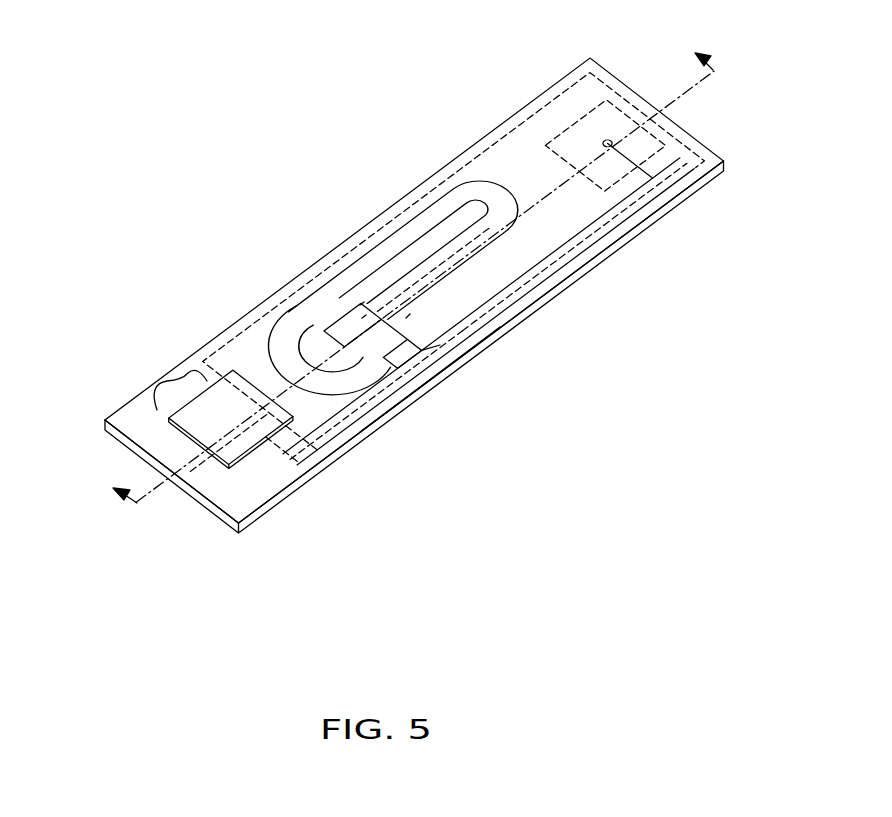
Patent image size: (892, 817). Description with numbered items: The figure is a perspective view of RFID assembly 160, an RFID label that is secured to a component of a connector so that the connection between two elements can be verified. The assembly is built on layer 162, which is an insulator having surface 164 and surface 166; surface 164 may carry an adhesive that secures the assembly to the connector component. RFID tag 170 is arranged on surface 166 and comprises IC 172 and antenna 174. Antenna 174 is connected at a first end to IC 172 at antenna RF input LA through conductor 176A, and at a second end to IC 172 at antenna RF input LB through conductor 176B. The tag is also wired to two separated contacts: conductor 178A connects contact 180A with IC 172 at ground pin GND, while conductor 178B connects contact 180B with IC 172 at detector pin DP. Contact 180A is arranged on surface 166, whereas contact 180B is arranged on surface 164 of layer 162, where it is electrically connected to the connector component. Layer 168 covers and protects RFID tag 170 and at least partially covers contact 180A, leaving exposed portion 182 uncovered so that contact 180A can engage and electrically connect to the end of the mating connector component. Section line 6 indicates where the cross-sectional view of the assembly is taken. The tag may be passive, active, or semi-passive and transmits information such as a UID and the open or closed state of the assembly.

The RFID assembly 160 is at (146, 106).
The layer 162 is at (218, 493).
The surface 164 is at (253, 523).
The surface 166 is at (267, 488).
The layer 168 is at (233, 342).
The RFID tag 170 is at (440, 367).
The IC 172 is at (436, 328).
The antenna 174 is at (460, 177).
The conductor 176A is at (387, 367).
The conductor 176B is at (408, 332).
The conductor 178A is at (322, 462).
The conductor 178B is at (600, 232).
The contact 180A is at (205, 428).
The contact 180B is at (603, 123).
The exposed portion 182 is at (171, 375).
The line 6- 6 is at (403, 261).
The ground pin GND is at (362, 318).
The antenna RF input LA is at (360, 305).
The antenna RF input LB is at (406, 318).
The detector pin DP is at (430, 343).